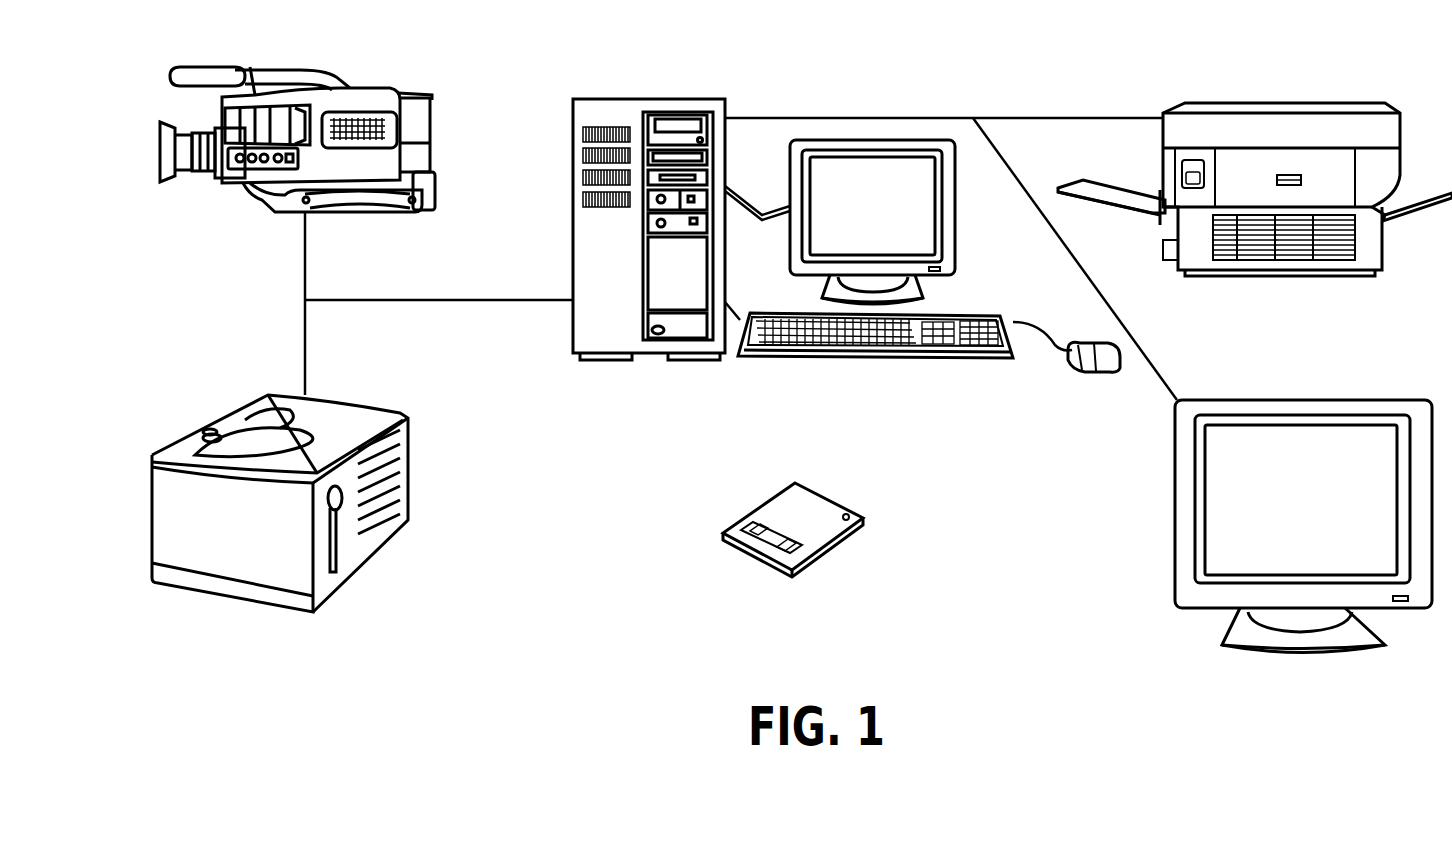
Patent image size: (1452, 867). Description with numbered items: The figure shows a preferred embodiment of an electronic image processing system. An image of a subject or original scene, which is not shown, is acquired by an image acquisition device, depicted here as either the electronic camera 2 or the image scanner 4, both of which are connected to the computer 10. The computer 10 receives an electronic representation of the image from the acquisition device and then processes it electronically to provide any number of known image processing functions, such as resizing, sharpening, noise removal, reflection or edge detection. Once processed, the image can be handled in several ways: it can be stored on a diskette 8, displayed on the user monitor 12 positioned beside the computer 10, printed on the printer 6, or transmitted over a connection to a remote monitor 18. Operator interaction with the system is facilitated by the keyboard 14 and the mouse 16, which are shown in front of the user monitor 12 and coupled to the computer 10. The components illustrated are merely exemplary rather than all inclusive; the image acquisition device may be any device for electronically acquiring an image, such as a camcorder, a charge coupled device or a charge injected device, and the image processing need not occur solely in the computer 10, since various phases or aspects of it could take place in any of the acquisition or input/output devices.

The electronic camera 2 is at (433, 115).
The image scanner 4 is at (378, 400).
The printer 6 is at (1178, 103).
The diskette 8 is at (835, 500).
The computer 10 is at (703, 99).
The user monitor 12 is at (955, 230).
The keyboard 14 is at (782, 363).
The mouse 16 is at (1077, 365).
The remote monitor 18 is at (1175, 512).